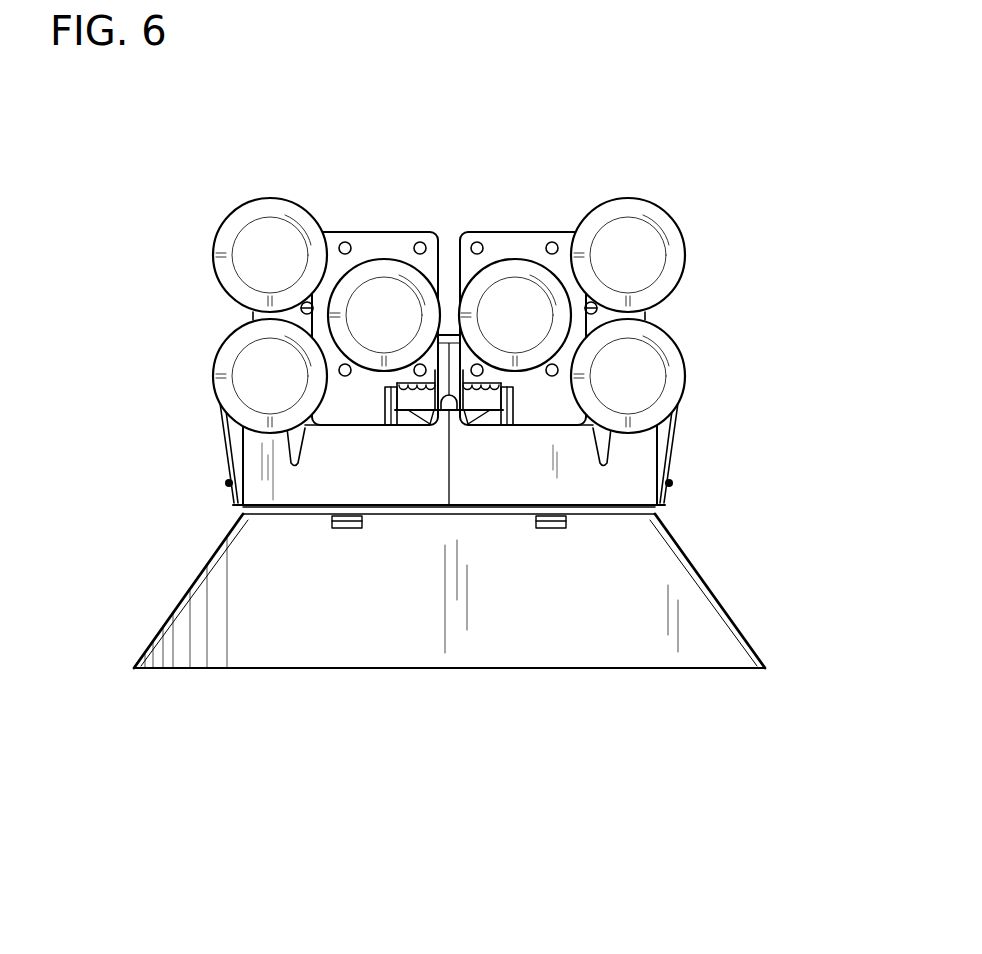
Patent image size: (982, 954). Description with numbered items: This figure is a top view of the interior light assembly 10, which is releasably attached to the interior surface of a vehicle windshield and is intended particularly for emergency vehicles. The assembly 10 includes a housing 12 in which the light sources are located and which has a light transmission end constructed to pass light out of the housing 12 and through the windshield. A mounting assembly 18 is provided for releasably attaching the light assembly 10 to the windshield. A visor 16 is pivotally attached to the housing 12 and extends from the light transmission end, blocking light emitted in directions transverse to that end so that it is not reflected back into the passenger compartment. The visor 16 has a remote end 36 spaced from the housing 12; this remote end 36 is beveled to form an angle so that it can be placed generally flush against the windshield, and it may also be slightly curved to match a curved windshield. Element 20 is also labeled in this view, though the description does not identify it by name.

The interior light assembly 10 is at (97, 717).
The housing 12 is at (642, 467).
The visor 16 is at (715, 637).
The mounting assembly 18 is at (662, 180).
The lower housing body 20 is at (342, 471).
The remote end 36 is at (470, 668).